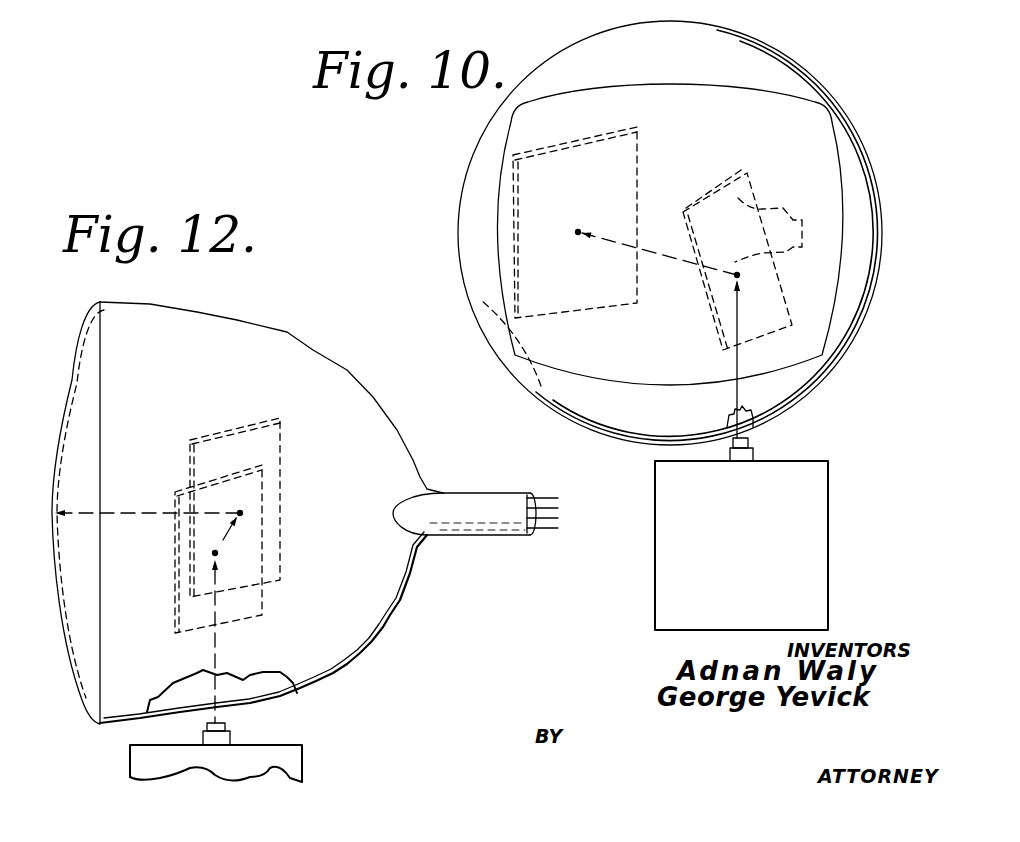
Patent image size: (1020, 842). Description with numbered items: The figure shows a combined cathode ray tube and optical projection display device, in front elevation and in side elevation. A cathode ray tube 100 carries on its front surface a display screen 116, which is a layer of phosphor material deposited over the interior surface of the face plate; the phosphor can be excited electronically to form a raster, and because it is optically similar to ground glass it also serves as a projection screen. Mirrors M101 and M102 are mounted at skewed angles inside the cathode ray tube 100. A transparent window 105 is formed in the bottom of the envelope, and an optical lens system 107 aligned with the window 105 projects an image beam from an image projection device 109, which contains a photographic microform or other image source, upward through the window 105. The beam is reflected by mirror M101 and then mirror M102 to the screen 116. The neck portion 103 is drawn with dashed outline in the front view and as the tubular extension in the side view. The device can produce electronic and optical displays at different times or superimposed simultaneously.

In FIG. 10, the cathode ray tube 100 is at (459, 205).
In FIG. 12, the cathode ray tube 100 is at (285, 333).
In FIG. 10, the display screen 116 is at (787, 110).
In FIG. 12, the display screen 116 is at (66, 624).
In FIG. 10, the mirror M102 is at (603, 130).
In FIG. 12, the mirror M102 is at (212, 437).
In FIG. 10, the mirror M101 is at (730, 180).
In FIG. 12, the mirror M101 is at (175, 592).
In FIG. 10, the electron gun neck 103 is at (780, 210).
In FIG. 12, the electron gun neck 103 is at (493, 525).
In FIG. 10, the transparent window 105 is at (727, 414).
In FIG. 12, the transparent window 105 is at (223, 700).
In FIG. 10, the optical lens system 107 is at (753, 452).
In FIG. 12, the optical lens system 107 is at (230, 740).
In FIG. 10, the image projection device 109 is at (828, 531).
In FIG. 12, the image projection device 109 is at (302, 775).